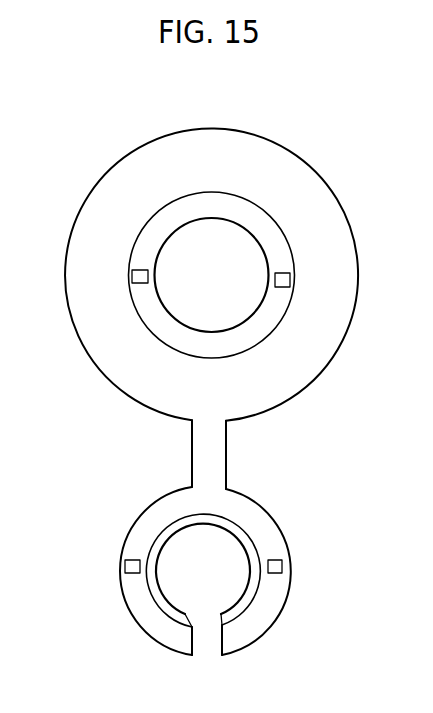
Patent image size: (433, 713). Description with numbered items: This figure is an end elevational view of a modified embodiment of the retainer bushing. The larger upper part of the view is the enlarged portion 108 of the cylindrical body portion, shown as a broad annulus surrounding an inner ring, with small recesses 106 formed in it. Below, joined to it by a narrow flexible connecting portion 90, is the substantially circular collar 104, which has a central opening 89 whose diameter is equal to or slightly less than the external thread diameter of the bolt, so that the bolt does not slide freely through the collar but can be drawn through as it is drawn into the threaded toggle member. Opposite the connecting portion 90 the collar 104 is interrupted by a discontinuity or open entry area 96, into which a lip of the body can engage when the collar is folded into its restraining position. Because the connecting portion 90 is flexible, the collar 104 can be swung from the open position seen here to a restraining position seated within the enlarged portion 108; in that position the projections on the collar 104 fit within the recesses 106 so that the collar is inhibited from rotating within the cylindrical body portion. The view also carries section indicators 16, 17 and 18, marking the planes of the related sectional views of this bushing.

The section line 16- 16 is at (213, 147).
The section line 17- 17 is at (85, 276).
The section line 18- 18 is at (125, 568).
The central opening 89 is at (177, 533).
The flexible connecting portion 90 is at (220, 453).
The discontinuity or open entry area 96 is at (192, 646).
The collar 104 is at (270, 528).
The recess 106 is at (283, 288).
The enlarged portion 108 is at (262, 328).